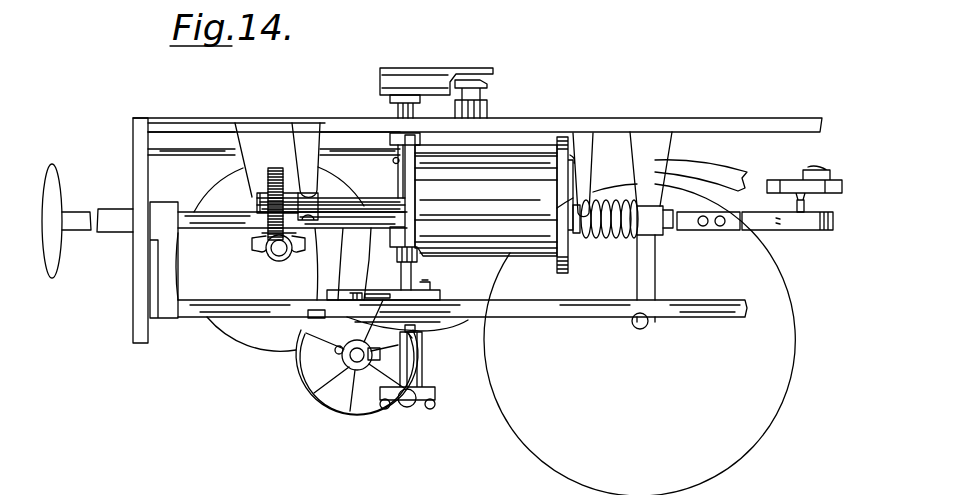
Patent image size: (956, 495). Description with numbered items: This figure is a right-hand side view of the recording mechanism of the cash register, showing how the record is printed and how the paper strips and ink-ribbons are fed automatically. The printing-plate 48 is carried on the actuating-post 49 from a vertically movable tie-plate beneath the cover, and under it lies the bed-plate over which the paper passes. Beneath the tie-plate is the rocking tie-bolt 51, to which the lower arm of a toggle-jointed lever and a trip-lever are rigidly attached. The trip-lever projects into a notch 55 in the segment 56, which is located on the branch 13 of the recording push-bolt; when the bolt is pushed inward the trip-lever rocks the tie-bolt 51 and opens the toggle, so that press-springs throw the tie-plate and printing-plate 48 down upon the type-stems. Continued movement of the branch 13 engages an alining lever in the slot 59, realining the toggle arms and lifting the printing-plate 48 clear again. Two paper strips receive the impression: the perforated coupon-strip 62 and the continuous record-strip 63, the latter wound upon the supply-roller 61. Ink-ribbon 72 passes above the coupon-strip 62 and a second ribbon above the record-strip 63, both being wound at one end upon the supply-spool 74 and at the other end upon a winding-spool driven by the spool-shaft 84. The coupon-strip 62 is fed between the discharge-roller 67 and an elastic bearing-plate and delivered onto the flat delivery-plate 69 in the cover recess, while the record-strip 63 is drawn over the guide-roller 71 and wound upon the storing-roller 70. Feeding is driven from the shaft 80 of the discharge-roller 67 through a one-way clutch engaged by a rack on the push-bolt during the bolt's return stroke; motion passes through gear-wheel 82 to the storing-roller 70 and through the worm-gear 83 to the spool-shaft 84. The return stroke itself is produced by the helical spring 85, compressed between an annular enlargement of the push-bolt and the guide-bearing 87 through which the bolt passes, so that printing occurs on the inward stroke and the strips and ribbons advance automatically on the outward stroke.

The branch of the recording push-bolt 13 is at (701, 304).
The printing-plate 48 is at (421, 68).
The actuating-post 49 is at (398, 109).
The tie-bolt 51 is at (406, 378).
The notch 55 is at (414, 334).
The segment 56 is at (408, 330).
The slot 59 is at (428, 294).
The supply-roller 61 is at (648, 322).
The coupon-strip 62 is at (743, 178).
The record-strip 63 is at (396, 178).
The discharge-roller 67 is at (291, 256).
The delivery-plate 69 is at (182, 146).
The storing-roller 70 is at (350, 358).
The guide-roller 71 is at (398, 164).
The ink-ribbon 72 is at (486, 196).
The supply-spool 74 is at (487, 261).
The shaft 80 is at (281, 258).
The gear-wheel 82 is at (352, 370).
The worm-gear 83 is at (256, 237).
The spool-shaft 84 is at (329, 200).
The helical spring 85 is at (601, 237).
The guide-bearing 87 is at (650, 220).